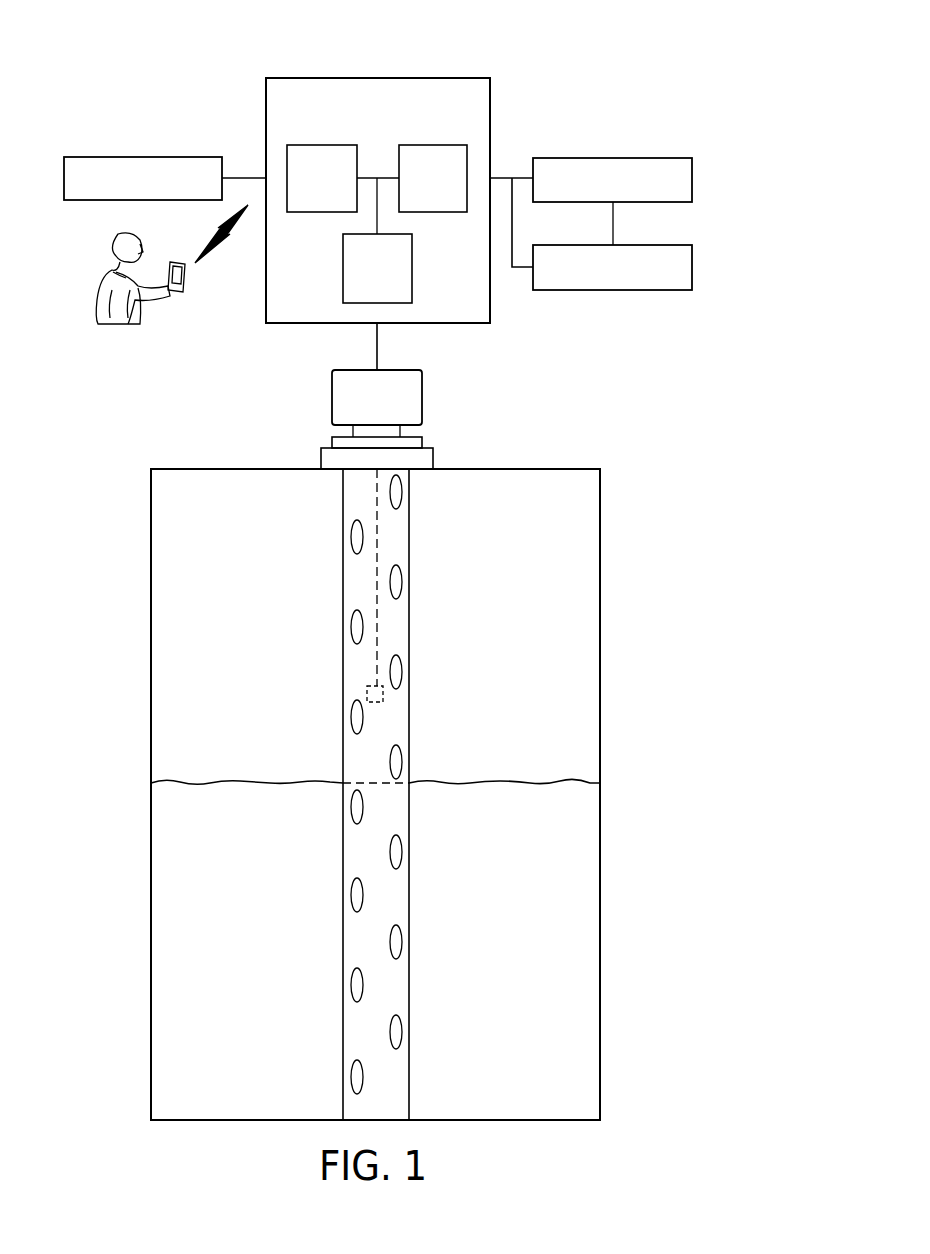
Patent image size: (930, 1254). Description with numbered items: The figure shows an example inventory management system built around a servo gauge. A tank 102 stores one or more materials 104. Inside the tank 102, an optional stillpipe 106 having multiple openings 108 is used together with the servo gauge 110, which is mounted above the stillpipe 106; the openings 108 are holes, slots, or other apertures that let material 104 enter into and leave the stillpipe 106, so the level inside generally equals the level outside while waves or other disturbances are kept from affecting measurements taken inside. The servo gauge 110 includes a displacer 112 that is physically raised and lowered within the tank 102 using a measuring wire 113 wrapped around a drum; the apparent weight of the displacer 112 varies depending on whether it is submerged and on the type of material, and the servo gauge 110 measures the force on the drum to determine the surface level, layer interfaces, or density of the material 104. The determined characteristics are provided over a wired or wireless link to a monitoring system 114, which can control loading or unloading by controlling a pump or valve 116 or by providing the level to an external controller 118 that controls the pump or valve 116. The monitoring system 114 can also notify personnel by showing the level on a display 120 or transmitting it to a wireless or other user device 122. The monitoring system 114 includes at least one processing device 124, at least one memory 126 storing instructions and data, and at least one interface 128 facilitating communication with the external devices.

The tank 102 is at (240, 468).
The material 104 is at (158, 942).
The stillpipe 106 is at (343, 586).
The openings 108 is at (402, 942).
The servo gauge 110 is at (423, 397).
The displacer 112 is at (367, 690).
The measuring wire 113 is at (377, 538).
The monitoring system 114 is at (378, 168).
The pump or valve 116 is at (622, 291).
The external controller 118 is at (625, 157).
The display 120 is at (141, 156).
The user device 122 is at (181, 300).
The processing device 124 is at (301, 194).
The memory 126 is at (412, 194).
The interface 128 is at (356, 283).